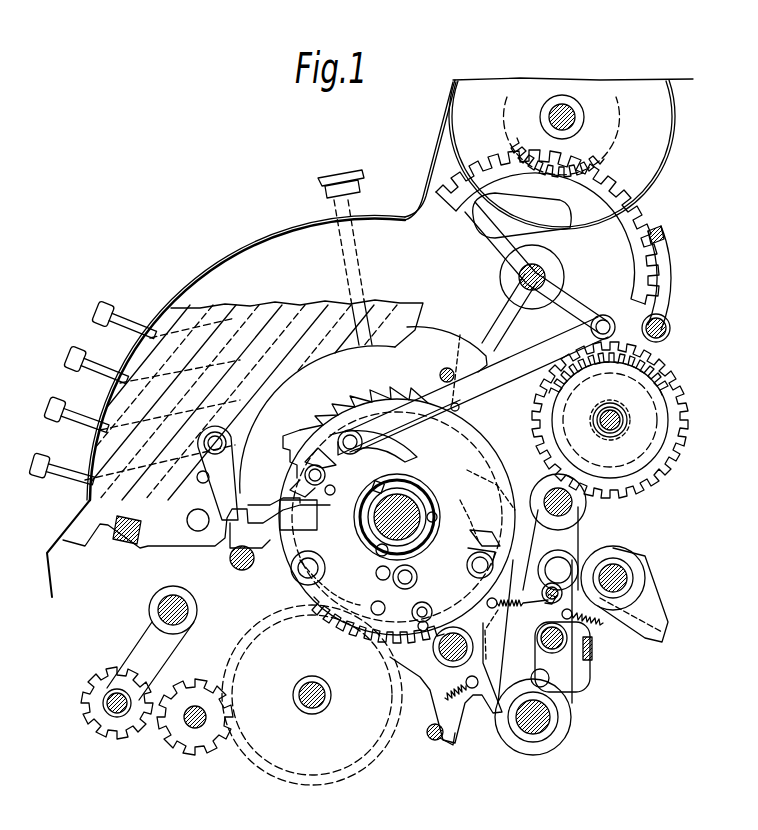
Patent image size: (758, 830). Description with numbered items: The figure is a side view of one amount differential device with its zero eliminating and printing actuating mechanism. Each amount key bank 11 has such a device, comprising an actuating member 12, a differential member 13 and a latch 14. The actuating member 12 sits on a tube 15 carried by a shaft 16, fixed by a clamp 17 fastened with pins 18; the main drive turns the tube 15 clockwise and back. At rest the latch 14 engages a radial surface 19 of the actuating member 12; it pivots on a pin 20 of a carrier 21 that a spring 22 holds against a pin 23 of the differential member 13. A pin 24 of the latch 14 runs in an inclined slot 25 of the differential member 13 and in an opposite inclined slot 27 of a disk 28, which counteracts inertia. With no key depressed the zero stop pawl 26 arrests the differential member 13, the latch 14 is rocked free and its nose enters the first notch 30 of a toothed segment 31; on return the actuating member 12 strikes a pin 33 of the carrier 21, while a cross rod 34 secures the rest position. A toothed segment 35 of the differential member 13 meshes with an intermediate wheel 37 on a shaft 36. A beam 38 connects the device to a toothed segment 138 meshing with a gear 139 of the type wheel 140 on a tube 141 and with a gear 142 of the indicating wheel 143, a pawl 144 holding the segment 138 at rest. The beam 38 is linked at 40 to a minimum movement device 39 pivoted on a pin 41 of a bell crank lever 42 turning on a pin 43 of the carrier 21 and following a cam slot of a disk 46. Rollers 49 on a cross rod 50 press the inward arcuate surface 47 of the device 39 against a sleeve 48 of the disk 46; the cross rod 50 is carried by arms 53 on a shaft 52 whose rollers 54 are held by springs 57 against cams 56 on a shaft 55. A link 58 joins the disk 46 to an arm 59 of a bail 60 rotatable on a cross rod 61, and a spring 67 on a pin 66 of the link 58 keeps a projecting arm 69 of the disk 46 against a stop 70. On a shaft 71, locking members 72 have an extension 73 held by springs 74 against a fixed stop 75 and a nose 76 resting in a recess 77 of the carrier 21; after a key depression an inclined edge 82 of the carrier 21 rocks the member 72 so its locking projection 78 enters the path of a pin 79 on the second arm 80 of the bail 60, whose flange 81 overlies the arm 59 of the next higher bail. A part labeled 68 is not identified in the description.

The amount key bank 11 is at (55, 410).
The actuating member 12 is at (298, 515).
The differential member 13 is at (263, 541).
The latch 14 is at (280, 503).
The tube 15 is at (420, 500).
The shaft 16 is at (428, 498).
The clamp 17 is at (377, 483).
The pins 18 is at (390, 494).
The radial surface 19 is at (330, 495).
The pin 20 is at (292, 574).
The carrier 21 is at (336, 578).
The spring 22 is at (417, 574).
The pin 23 is at (472, 512).
The pin 24 is at (318, 464).
The inclined slot 25 is at (325, 458).
The zero stop pawl 26 is at (228, 485).
The inclined slot 27 is at (300, 486).
The disk 28 is at (417, 455).
The first notch 30 is at (290, 462).
The toothed segment 31 is at (422, 340).
The pin 33 is at (376, 573).
The cross rod 34 is at (244, 570).
The toothed segment 35 is at (325, 604).
The shaft 36 is at (302, 682).
The intermediate wheel 37 is at (230, 690).
The beam 38 is at (545, 358).
The minimum movement device 39 is at (488, 445).
The link point 40 is at (352, 430).
The pin 41 is at (497, 552).
The bell crank lever 42 is at (498, 528).
The pin 43 is at (478, 562).
The disk 46 is at (460, 407).
The inward arcuate surface 47 is at (500, 472).
The sleeve 48 is at (436, 514).
The rollers 49 is at (535, 496).
The cross rod 50 is at (552, 490).
The shaft 52 is at (560, 719).
The arms 53 is at (565, 537).
The rollers 54 is at (570, 560).
The shaft 55 is at (622, 568).
The cams 56 is at (650, 624).
The springs 57 is at (640, 610).
The link 58 is at (510, 605).
The arm 59 is at (548, 604).
The bail 60 is at (593, 650).
The cross rod 61 is at (537, 640).
The pin 66 is at (505, 602).
The spring 67 is at (546, 598).
The shaft 68 is at (604, 568).
The projecting arm 69 is at (465, 361).
The stop 70 is at (448, 366).
The shaft 71 is at (474, 644).
The locking member 72 is at (440, 660).
The extension 73 is at (455, 745).
The springs 74 is at (444, 698).
The fixed stop 75 is at (428, 732).
The nose 76 is at (380, 615).
The recess 77 is at (420, 622).
The locking projection 78 is at (512, 668).
The pin 79 is at (547, 684).
The second arm 80 is at (568, 672).
The flange 81 is at (592, 630).
The inclined edge 82 is at (424, 630).
The toothed segment 138 is at (470, 232).
The gear 139 is at (628, 478).
The type wheel 140 is at (662, 478).
The tube 141 is at (620, 430).
The gear 142 is at (604, 135).
The indicating wheel 143 is at (652, 176).
The pawl 144 is at (664, 243).